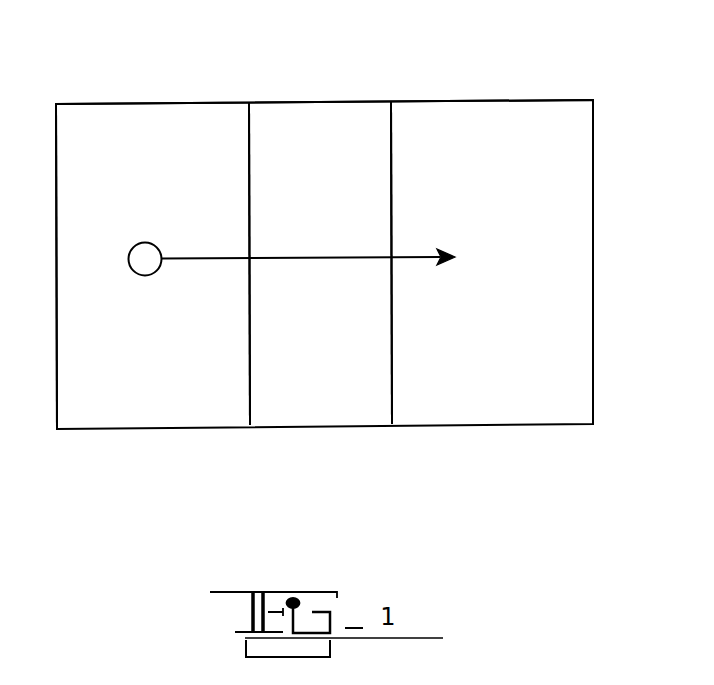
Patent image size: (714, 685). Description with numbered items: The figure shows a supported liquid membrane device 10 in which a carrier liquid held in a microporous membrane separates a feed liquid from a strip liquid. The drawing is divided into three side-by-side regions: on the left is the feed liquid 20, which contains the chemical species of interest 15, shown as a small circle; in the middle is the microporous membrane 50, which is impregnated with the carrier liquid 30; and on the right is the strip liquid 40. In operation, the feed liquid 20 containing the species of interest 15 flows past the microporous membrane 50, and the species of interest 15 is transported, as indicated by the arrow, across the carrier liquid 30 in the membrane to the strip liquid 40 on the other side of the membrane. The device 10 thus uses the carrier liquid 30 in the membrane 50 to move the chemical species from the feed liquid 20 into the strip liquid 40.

The supported liquid membrane device 10 is at (470, 82).
The chemical species of interest 15 is at (150, 237).
The feed liquid 20 is at (188, 125).
The carrier liquid 30 is at (328, 417).
The strip liquid 40 is at (485, 410).
The microporous membrane 50 is at (313, 100).